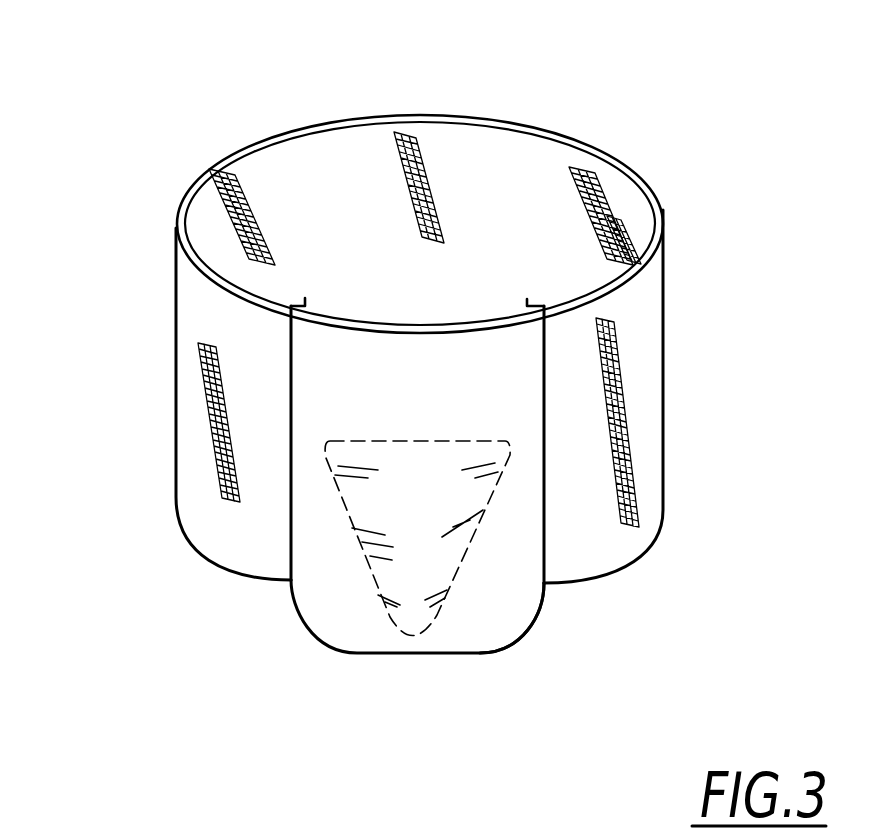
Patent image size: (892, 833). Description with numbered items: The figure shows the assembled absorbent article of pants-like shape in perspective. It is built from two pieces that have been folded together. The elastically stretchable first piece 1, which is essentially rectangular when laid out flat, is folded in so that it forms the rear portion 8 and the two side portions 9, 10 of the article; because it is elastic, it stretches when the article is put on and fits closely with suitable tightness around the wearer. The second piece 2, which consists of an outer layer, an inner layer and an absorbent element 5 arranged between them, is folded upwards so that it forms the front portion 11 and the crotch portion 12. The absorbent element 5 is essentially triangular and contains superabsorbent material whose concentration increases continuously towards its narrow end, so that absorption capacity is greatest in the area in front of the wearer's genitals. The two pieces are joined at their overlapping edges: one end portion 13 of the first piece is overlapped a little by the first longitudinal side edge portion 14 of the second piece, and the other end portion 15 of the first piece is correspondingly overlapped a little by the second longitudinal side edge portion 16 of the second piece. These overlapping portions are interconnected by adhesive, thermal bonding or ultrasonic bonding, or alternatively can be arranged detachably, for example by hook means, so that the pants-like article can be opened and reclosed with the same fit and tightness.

The first piece 1 is at (568, 125).
The second piece 2 is at (296, 628).
The absorbent element 5 is at (418, 630).
The rear portion 8 is at (355, 155).
The side portion 9 is at (193, 405).
The side portion 10 is at (648, 377).
The front portion 11 is at (428, 352).
The crotch portion 12 is at (497, 618).
The end portion 13 is at (217, 272).
The first longitudinal side edge portion 14 is at (300, 442).
The end portion 15 is at (615, 270).
The second longitudinal side edge portion 16 is at (535, 492).